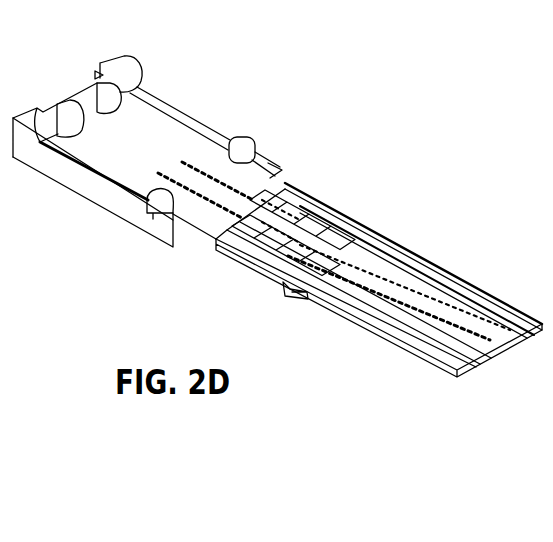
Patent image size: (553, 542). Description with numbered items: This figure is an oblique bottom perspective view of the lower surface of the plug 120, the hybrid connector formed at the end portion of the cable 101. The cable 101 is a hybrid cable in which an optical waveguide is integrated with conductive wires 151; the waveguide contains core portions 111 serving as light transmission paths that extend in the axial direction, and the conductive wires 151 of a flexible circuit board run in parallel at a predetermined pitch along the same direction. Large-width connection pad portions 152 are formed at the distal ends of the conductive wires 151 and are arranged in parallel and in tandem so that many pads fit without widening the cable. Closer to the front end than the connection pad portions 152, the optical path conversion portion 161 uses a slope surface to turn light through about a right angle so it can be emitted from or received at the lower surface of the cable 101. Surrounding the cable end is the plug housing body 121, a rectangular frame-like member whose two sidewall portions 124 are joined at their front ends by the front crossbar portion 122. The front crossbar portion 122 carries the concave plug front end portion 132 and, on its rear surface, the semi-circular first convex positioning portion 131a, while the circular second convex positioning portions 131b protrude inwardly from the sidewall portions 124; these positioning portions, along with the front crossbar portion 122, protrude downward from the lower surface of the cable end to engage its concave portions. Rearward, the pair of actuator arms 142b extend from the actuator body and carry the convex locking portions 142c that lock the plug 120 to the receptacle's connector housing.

The cable 101 is at (408, 340).
The core portion 111 is at (247, 202).
The plug 120 is at (507, 243).
The plug housing body 121 is at (22, 160).
The front crossbar portion 122 is at (125, 62).
The sidewall portions 124 is at (84, 198).
The first convex positioning portion 131a is at (68, 115).
The second convex positioning portions 131b is at (160, 217).
The concave plug front end portion 132 is at (96, 80).
The actuator arms 142b is at (263, 27).
The convex locking portion 142c is at (285, 298).
The conductive wires 151 is at (333, 212).
The connection pad portions 152 is at (290, 180).
The optical path conversion portion 161 is at (183, 160).